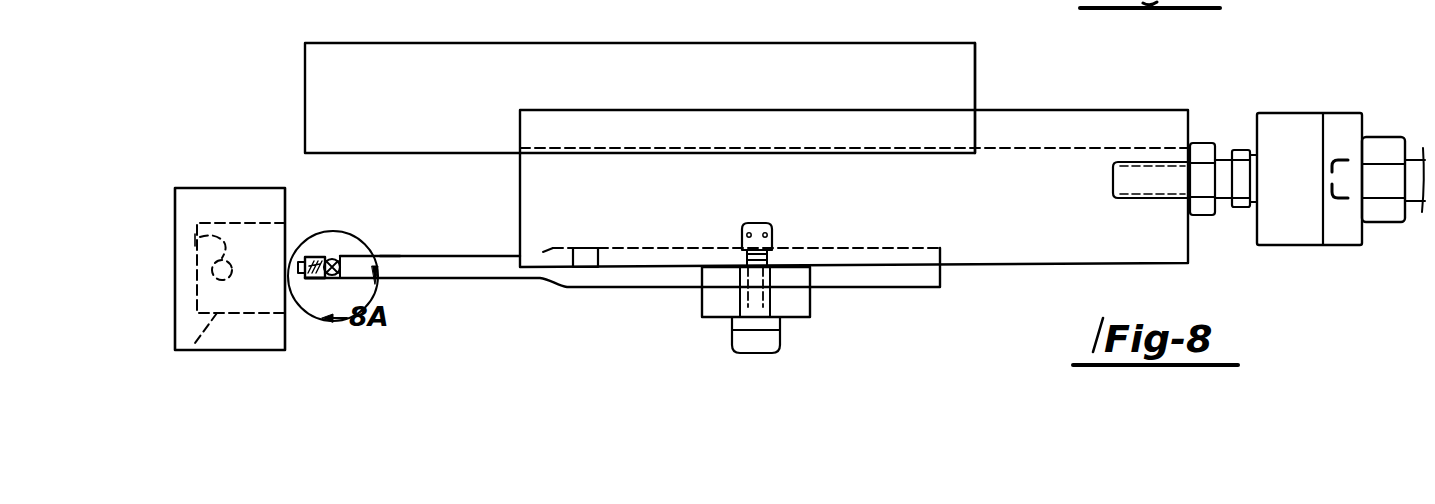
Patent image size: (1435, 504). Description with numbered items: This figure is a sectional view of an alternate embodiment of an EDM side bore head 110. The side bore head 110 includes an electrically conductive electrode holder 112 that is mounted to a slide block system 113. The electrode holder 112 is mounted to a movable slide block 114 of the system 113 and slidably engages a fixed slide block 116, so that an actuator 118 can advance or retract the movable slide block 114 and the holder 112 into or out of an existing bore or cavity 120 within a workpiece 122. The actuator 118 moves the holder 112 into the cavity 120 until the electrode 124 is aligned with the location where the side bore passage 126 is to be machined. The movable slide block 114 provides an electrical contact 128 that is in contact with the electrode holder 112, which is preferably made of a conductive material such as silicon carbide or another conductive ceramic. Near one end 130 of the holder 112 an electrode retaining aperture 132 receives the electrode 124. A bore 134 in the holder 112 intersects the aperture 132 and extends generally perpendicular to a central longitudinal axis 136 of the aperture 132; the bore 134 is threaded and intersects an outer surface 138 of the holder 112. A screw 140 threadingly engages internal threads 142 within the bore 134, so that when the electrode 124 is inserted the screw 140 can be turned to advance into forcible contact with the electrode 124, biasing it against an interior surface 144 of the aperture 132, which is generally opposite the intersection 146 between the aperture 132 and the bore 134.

The side bore head 110 is at (557, 334).
The electrode holder 112 is at (498, 273).
The slide block system 113 is at (980, 58).
The movable slide block 114 is at (1058, 238).
The fixed slide block 116 is at (587, 58).
The actuator 118 is at (1418, 203).
The cavity 120 is at (192, 351).
The workpiece 122 is at (258, 340).
The electrode 124 is at (343, 322).
The side bore passage 126 is at (200, 241).
The electrical contact 128 is at (585, 256).
The end 130 is at (331, 259).
The electrode retaining aperture 132 is at (377, 264).
The bore 134 is at (318, 279).
The central longitudinal axis 136 is at (332, 277).
The outer surface 138 is at (298, 261).
The screw 140 is at (302, 279).
The internal threads 142 is at (315, 257).
The interior surface 144 is at (393, 257).
The intersection 146 is at (343, 260).